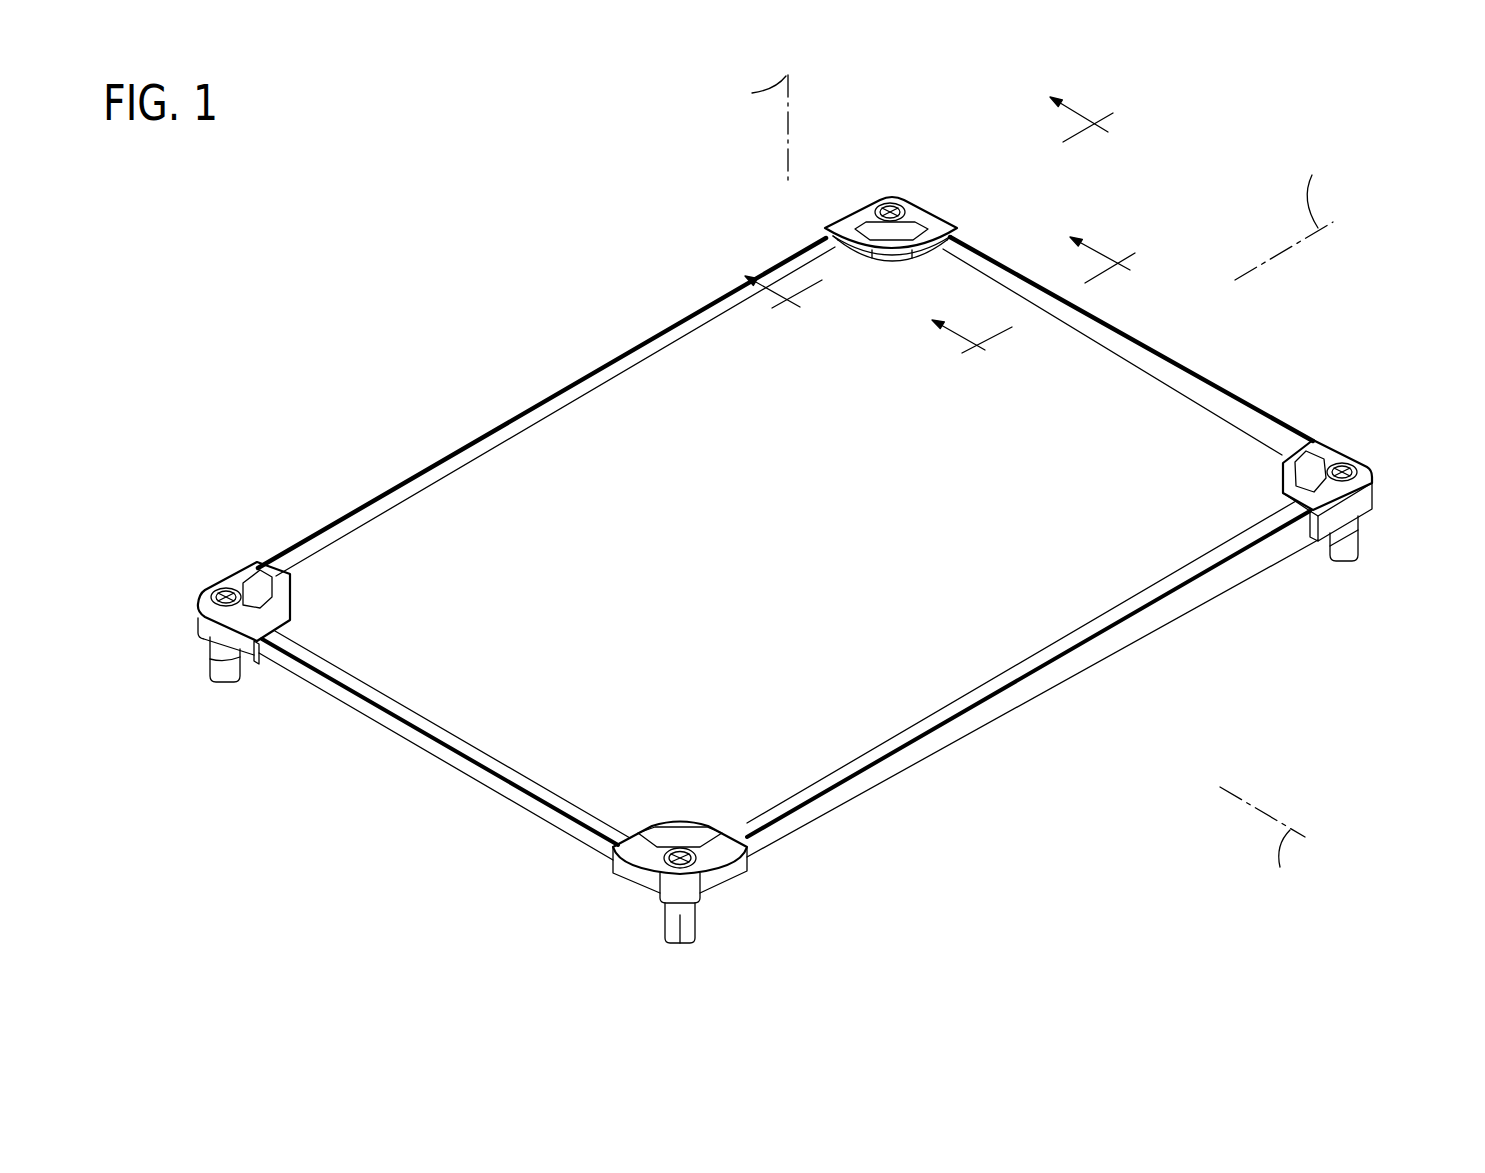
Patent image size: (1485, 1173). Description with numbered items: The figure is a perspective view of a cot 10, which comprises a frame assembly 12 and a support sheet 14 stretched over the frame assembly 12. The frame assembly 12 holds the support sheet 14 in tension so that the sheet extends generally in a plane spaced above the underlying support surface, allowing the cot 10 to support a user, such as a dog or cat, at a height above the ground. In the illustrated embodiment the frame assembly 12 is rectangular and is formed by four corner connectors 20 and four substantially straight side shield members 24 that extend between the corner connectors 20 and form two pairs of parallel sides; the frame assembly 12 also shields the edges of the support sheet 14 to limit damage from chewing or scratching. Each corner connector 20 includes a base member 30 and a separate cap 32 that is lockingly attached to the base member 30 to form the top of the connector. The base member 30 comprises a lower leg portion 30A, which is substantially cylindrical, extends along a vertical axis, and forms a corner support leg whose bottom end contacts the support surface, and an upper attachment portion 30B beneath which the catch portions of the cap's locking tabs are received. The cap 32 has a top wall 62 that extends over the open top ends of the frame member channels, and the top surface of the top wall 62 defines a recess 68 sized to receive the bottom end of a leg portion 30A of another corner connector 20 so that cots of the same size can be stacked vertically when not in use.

The cot 10 is at (290, 868).
The frame assembly 12 is at (925, 775).
The support sheet 14 is at (754, 556).
The corner connector 20 is at (905, 192).
The side shield member 24 is at (522, 410).
The base member 30 is at (937, 210).
The leg portion 30A is at (228, 668).
The attachment portion 30B is at (205, 620).
The cap 32 is at (244, 656).
The top wall 62 is at (853, 236).
The recess 68 is at (890, 202).